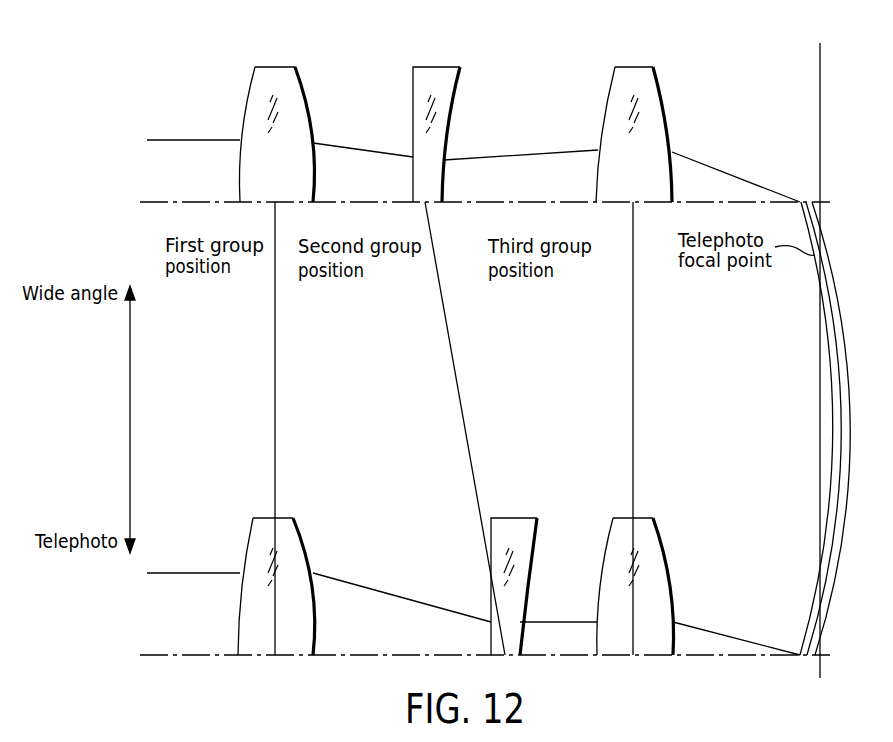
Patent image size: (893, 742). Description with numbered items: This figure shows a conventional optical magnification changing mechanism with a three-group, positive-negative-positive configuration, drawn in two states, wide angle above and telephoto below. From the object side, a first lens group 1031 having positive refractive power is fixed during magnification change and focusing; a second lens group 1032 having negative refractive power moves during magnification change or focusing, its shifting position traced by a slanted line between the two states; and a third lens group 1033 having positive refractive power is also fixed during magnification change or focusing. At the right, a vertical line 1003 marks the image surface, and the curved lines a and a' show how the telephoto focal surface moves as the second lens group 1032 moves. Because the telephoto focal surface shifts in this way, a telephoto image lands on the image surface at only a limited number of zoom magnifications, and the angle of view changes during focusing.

The first lens group 1031 is at (274, 66).
The second lens group 1032 is at (435, 66).
The third lens group 1033 is at (634, 66).
The image pickup element / image plane 1003 is at (820, 63).
The curve a is at (834, 428).
The curve a' is at (834, 428).